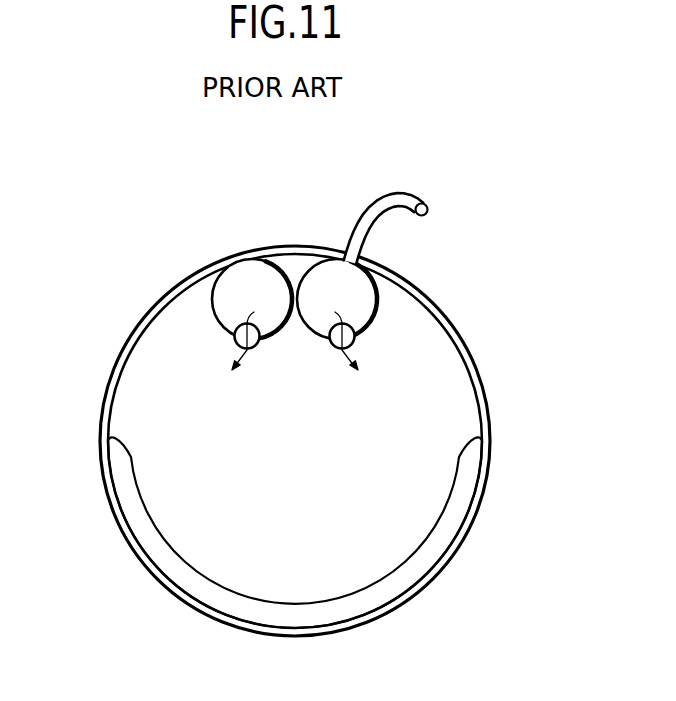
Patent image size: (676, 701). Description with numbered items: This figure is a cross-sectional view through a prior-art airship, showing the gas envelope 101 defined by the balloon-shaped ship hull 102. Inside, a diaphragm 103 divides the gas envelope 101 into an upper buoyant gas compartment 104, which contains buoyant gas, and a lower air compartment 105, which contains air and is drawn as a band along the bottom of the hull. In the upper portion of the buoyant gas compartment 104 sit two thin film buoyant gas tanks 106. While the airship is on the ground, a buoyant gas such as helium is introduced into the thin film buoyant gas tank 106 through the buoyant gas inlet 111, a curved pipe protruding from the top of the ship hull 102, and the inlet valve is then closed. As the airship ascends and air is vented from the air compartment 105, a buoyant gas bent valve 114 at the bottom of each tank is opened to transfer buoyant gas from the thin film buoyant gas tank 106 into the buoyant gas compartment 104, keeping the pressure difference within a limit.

The gas envelope 101 is at (456, 331).
The ship hull 102 is at (466, 373).
The diaphragm 103 is at (156, 530).
The buoyant gas compartment 104 is at (203, 392).
The air compartment 105 is at (440, 537).
The thin film buoyant gas tank 106 is at (213, 303).
The buoyant gas inlet 111 is at (381, 198).
The buoyant gas bent valve 114 is at (335, 345).